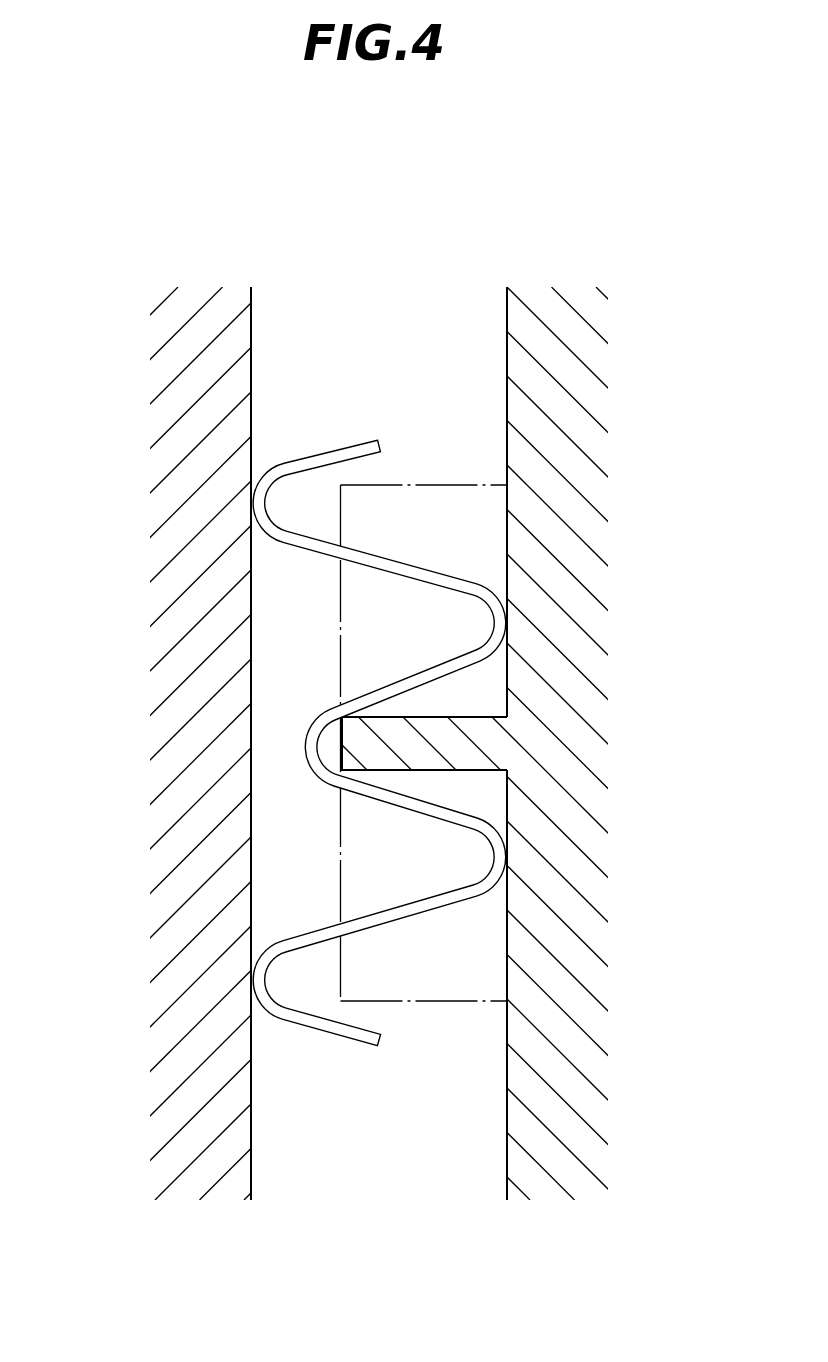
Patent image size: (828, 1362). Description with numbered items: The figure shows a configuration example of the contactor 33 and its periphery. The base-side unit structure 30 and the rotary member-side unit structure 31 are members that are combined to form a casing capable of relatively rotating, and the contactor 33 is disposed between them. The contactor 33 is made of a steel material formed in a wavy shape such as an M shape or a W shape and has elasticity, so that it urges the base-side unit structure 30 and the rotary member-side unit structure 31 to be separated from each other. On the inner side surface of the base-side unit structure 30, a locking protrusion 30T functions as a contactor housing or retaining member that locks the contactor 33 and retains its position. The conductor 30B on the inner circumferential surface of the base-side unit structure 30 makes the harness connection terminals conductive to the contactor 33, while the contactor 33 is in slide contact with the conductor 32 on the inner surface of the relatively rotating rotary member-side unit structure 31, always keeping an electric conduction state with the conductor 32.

The base-side unit structure 30 is at (414, 669).
The conductor 30B is at (507, 330).
The locking protrusion 30T is at (433, 743).
The rotary member-side unit structure 31 is at (414, 743).
The conductor 32 is at (251, 480).
The contactor 33 is at (342, 445).